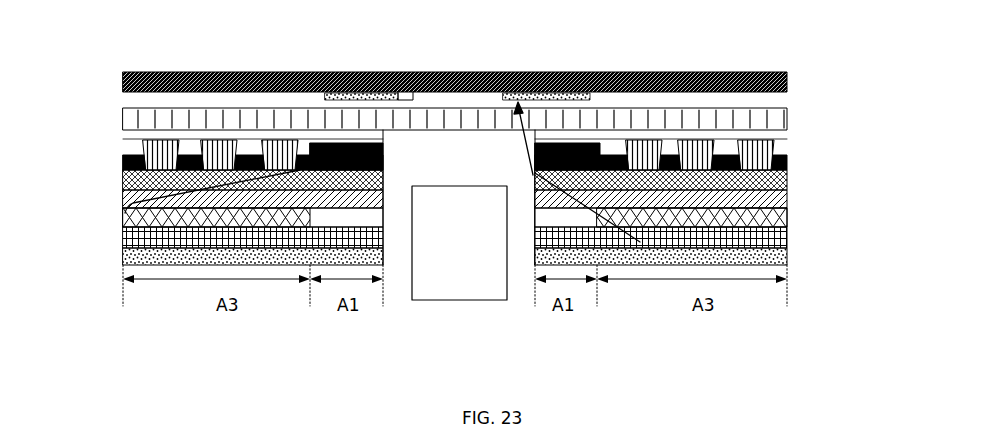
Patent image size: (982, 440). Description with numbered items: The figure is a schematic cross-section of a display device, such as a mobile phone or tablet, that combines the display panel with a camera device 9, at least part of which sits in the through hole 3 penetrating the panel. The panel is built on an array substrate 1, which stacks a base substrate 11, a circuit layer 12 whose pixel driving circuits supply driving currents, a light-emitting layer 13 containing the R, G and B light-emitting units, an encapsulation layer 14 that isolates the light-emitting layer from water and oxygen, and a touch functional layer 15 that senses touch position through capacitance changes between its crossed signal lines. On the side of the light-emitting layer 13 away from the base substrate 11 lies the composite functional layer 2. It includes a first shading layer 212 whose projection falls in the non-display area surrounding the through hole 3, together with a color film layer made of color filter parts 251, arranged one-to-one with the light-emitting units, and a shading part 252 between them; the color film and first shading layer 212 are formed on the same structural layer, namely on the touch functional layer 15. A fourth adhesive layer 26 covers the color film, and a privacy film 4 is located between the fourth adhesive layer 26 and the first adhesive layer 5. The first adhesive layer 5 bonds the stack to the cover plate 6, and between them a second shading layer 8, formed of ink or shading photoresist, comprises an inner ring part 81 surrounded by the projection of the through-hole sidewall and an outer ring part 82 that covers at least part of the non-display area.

The array substrate 1 is at (510, 224).
The base substrate 11 is at (489, 275).
The circuit layer 12 is at (787, 238).
The light-emitting layer 13 is at (787, 217).
The encapsulation layer 14 is at (787, 201).
The touch functional layer 15 is at (787, 173).
The composite functional layer 2 is at (403, 163).
The fourth adhesive layer 26 is at (163, 135).
The color filter parts 251 is at (147, 152).
The shading part 252 is at (125, 173).
The first shading layer 212 is at (353, 206).
The through hole 3 is at (514, 280).
The privacy film 4 is at (787, 121).
The first adhesive layer 5 is at (787, 92).
The cover plate 6 is at (521, 92).
The second shading layer 8 is at (328, 53).
The inner ring part 81 is at (396, 94).
The outer ring part 82 is at (337, 92).
The camera device 9 is at (432, 278).